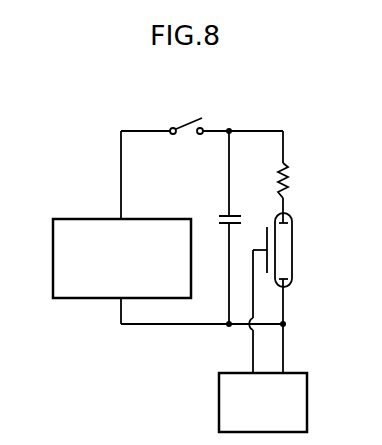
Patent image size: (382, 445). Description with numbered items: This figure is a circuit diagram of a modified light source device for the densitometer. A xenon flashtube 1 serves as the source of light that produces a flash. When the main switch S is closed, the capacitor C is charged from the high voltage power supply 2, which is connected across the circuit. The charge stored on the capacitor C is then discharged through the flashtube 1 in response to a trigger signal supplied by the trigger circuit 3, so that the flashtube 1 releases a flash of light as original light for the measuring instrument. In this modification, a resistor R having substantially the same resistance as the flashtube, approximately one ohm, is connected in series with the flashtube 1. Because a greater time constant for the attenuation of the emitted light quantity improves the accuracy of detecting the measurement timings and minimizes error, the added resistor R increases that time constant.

The xenon flashtube 1 is at (293, 244).
The high voltage power supply 2 is at (101, 218).
The trigger circuit 3 is at (219, 396).
The main switch S is at (187, 120).
The capacitor C is at (222, 214).
The resistor R is at (286, 188).